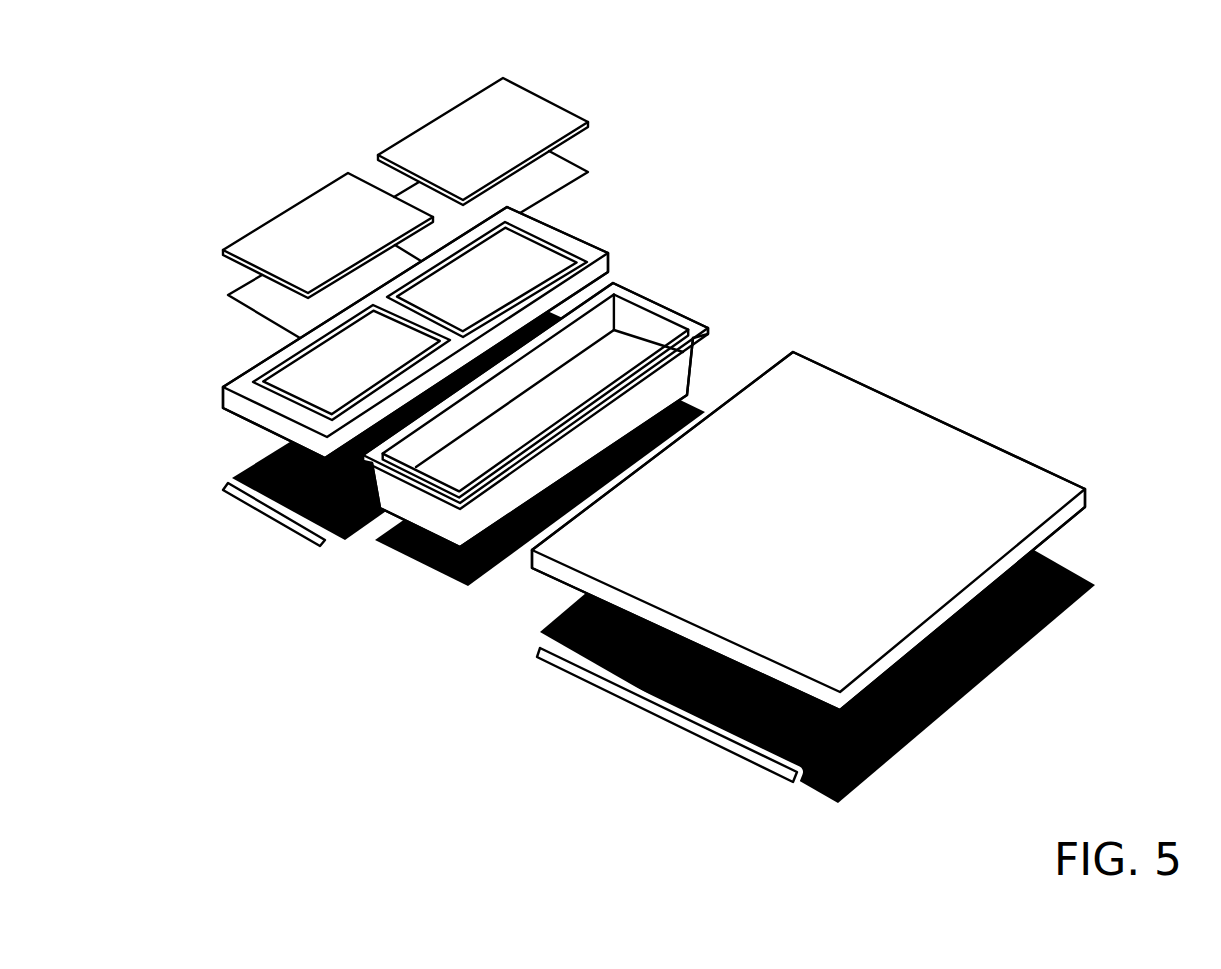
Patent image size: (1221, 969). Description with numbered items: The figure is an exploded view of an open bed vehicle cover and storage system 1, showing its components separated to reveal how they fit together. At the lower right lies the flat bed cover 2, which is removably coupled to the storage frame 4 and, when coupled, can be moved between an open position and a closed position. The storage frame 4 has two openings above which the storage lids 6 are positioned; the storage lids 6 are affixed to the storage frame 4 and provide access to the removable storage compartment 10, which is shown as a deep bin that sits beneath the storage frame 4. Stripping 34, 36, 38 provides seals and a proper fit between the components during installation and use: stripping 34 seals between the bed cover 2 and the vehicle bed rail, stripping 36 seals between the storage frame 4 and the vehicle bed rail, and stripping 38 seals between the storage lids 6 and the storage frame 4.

The open bed vehicle cover and storage system 1 is at (995, 142).
The bed cover 2 is at (952, 564).
The storage frame 4 is at (252, 414).
The storage lids 6 is at (538, 107).
The removable storage compartment 10 is at (668, 308).
The stripping 34 is at (632, 695).
The stripping 36 is at (290, 527).
The stripping 38 is at (258, 315).